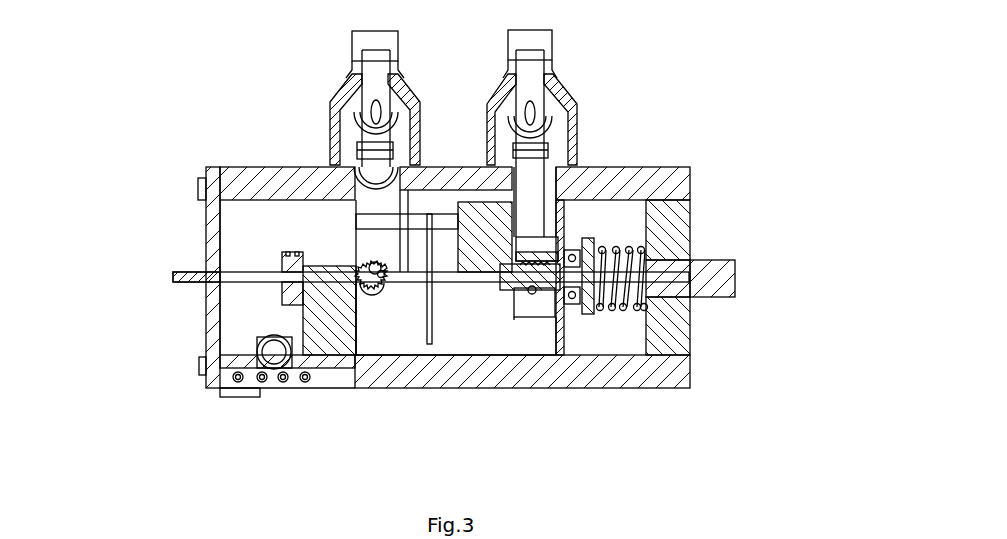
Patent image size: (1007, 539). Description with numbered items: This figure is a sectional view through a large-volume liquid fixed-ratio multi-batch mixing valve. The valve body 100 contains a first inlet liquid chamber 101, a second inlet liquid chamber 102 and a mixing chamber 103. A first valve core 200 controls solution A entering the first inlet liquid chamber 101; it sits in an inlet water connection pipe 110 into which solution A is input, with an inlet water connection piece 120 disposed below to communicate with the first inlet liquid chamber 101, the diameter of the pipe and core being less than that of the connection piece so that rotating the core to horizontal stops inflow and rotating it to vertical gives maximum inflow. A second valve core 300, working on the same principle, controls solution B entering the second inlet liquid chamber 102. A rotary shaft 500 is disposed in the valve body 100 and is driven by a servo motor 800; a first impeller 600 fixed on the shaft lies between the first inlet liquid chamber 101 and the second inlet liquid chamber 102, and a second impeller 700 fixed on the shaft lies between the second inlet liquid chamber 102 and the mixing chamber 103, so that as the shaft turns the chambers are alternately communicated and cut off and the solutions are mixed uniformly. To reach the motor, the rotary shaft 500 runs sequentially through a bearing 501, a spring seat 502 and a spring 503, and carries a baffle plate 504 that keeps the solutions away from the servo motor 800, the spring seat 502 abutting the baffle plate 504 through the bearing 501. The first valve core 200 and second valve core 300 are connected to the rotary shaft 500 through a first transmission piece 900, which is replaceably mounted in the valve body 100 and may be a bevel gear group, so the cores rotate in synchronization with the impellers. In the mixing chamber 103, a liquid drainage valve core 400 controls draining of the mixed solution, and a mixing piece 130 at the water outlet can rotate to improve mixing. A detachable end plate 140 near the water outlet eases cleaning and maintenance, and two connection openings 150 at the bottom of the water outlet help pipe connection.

The valve body 100 is at (243, 165).
The first inlet liquid chamber 101 is at (538, 337).
The second inlet liquid chamber 102 is at (398, 333).
The mixing chamber 103 is at (247, 318).
The inlet water connection pipe 110 is at (507, 47).
The inlet water connection piece 120 is at (507, 117).
The mixing piece 130 is at (283, 367).
The end plate 140 is at (203, 212).
The connection openings 150 is at (258, 397).
The first valve core 200 is at (528, 103).
The second valve core 300 is at (370, 108).
The liquid drainage valve core 400 is at (240, 388).
The rotary shaft 500 is at (183, 272).
The bearing 501 is at (585, 237).
The spring seat 502 is at (605, 248).
The spring 503 is at (648, 262).
The baffle plate 504 is at (600, 372).
The first impeller 600 is at (548, 240).
The second impeller 700 is at (328, 333).
The servo motor 800 is at (735, 286).
The first transmission piece 900 is at (360, 262).